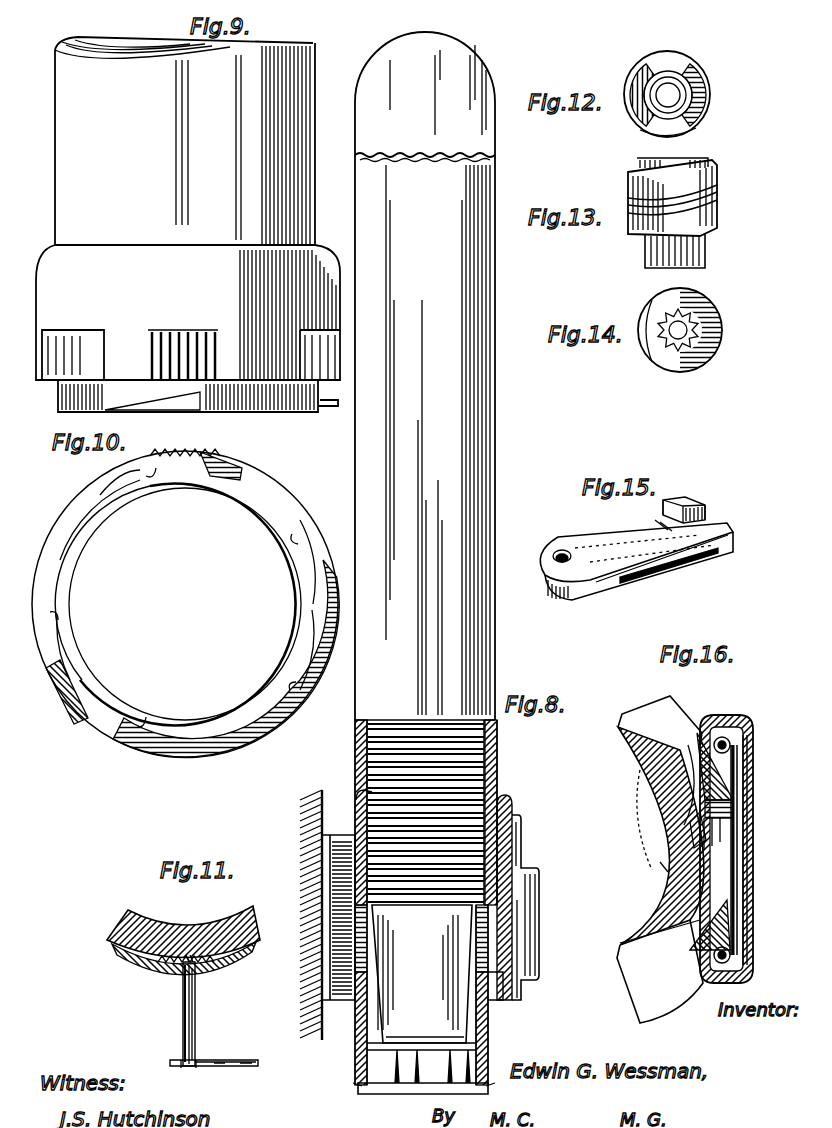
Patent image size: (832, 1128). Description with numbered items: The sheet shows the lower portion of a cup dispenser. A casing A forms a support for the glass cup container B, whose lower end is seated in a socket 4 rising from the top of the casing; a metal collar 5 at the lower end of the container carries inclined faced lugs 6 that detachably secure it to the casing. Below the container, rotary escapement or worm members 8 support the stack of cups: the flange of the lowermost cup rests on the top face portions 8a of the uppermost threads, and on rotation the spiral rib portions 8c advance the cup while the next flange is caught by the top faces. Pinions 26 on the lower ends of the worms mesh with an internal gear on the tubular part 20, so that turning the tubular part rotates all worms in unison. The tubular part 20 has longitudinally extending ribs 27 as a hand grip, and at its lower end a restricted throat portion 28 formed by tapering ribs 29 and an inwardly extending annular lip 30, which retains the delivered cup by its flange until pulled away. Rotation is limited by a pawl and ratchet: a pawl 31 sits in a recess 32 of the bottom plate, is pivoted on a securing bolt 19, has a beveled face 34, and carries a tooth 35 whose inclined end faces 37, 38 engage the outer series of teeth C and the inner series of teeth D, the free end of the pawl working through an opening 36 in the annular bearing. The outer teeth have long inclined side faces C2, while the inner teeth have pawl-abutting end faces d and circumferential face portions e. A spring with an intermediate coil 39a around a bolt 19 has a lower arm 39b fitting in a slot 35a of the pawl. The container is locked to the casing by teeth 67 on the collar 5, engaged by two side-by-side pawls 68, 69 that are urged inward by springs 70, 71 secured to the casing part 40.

In FIG. 9, the cup container B is at (185, 141).
In FIG. 8, the cup container B is at (425, 376).
In FIG. 9, the metal collar 5 is at (188, 312).
In FIG. 10, the metal collar 5 is at (60, 600).
In FIG. 11, the metal collar 5 is at (190, 932).
In FIG. 9, the series of teeth 67 is at (176, 342).
In FIG. 10, the series of teeth 67 is at (208, 450).
In FIG. 11, the series of teeth 67 is at (172, 960).
In FIG. 9, the inclined faced lugs 6 is at (178, 412).
In FIG. 10, the inclined faced lugs 6 is at (133, 484).
In FIG. 8, the socket 4 is at (505, 810).
In FIG. 11, the socket 4 is at (138, 968).
In FIG. 8, the casing A is at (531, 907).
In FIG. 8, the casing part 40 is at (322, 890).
In FIG. 8, the rotary escapement or worm member 8 is at (385, 927).
In FIG. 12, the rotary escapement or worm member 8 is at (640, 118).
In FIG. 13, the rotary escapement or worm member 8 is at (648, 232).
In FIG. 14, the rotary escapement or worm member 8 is at (696, 364).
In FIG. 12, the top face portion 8a is at (708, 100).
In FIG. 13, the top face portion 8a is at (712, 164).
In FIG. 13, the spiral rib portion 8c is at (718, 205).
In FIG. 13, the pinion 26 is at (705, 252).
In FIG. 14, the pinion 26 is at (702, 330).
In FIG. 8, the longitudinally extending ribs 27 is at (356, 1014).
In FIG. 8, the tubular part 20 is at (490, 1058).
In FIG. 8, the restricted throat portion 28 is at (380, 1048).
In FIG. 8, the tapering ribs 29 is at (432, 1078).
In FIG. 8, the annular lip or flange 30 is at (370, 1094).
In FIG. 15, the pawl 31 is at (610, 536).
In FIG. 16, the pawl 31 is at (738, 890).
In FIG. 15, the beveled face 34 is at (722, 534).
In FIG. 15, the tooth 35 is at (693, 500).
In FIG. 15, the slot or groove 35a is at (690, 560).
In FIG. 15, the inclined end face 37 is at (710, 510).
In FIG. 15, the inclined end face 38 is at (663, 511).
In FIG. 16, the outer series of teeth C is at (736, 849).
In FIG. 16, the recess 32 is at (748, 848).
In FIG. 16, the securing bolt 19 is at (731, 746).
In FIG. 16, the intermediate coil 39a is at (745, 778).
In FIG. 16, the lower arm 39b is at (744, 806).
In FIG. 16, the inner series of teeth D is at (690, 878).
In FIG. 16, the opening 36 is at (694, 818).
In FIG. 16, the pawl-abutting end face d is at (662, 864).
In FIG. 16, the inclined side face C2 is at (690, 770).
In FIG. 16, the circumferential face portion e is at (710, 875).
In FIG. 11, the pawl 68 is at (196, 1012).
In FIG. 11, the pawl 69 is at (184, 1018).
In FIG. 11, the spring 70 is at (210, 1068).
In FIG. 11, the spring 71 is at (238, 1058).